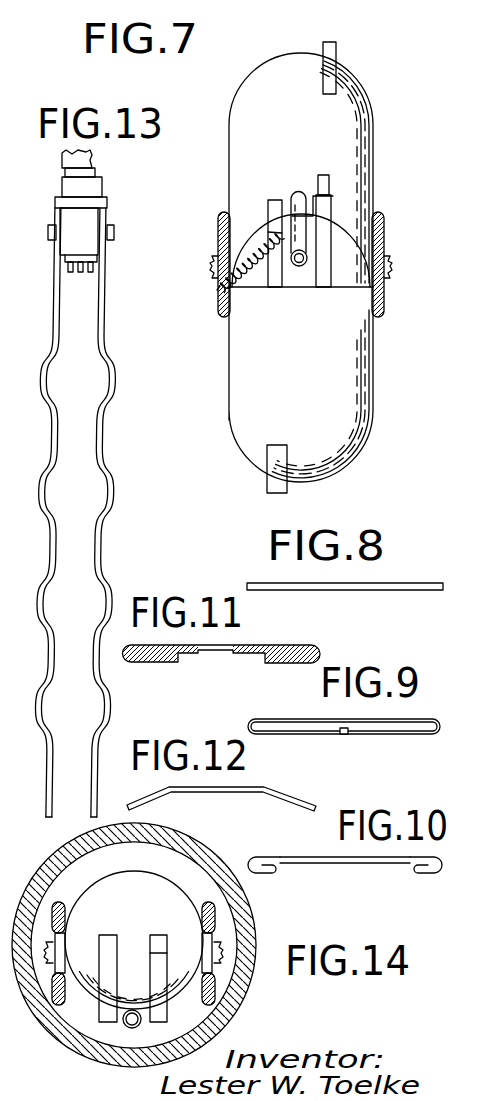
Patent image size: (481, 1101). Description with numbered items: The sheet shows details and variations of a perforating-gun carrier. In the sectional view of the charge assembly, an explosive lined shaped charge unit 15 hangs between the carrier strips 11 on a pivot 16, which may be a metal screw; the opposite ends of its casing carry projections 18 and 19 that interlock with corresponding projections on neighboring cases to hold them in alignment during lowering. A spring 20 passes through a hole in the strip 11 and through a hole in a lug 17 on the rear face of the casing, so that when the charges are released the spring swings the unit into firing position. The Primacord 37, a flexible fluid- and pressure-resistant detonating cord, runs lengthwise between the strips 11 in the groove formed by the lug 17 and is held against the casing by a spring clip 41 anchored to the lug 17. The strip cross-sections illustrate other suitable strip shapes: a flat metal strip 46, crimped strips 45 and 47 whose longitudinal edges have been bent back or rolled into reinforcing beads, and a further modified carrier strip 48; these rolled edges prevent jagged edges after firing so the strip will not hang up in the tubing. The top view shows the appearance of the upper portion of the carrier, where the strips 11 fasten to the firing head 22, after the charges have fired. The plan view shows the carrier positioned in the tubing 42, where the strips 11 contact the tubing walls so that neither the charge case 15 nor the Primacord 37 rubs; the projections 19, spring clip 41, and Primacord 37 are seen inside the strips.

In FIG. 7, the carrier strips 11 is at (218, 234).
In FIG. 13, the carrier strips 11 is at (115, 388).
In FIG. 11, the carrier strips 11 is at (188, 654).
In FIG. 14, the carrier strips 11 is at (55, 917).
In FIG. 7, the shaped charge unit 15 is at (360, 133).
In FIG. 14, the shaped charge unit 15 is at (93, 983).
In FIG. 7, the pivot 16 is at (210, 272).
In FIG. 7, the lug 17 is at (268, 202).
In FIG. 7, the projection 18 is at (337, 55).
In FIG. 7, the projection 19 is at (329, 183).
In FIG. 14, the projection 19 is at (105, 1020).
In FIG. 7, the spring 20 is at (255, 268).
In FIG. 13, the firing head 22 is at (88, 188).
In FIG. 7, the Primacord 37 is at (300, 267).
In FIG. 14, the Primacord 37 is at (127, 1028).
In FIG. 7, the spring clip 41 is at (333, 196).
In FIG. 14, the tubing 42 is at (245, 917).
In FIG. 9, the plate 45 is at (320, 735).
In FIG. 8, the flat metal strip 46 is at (313, 590).
In FIG. 10, the hook wire 47 is at (330, 873).
In FIG. 12, the carrier strip 48 is at (220, 792).